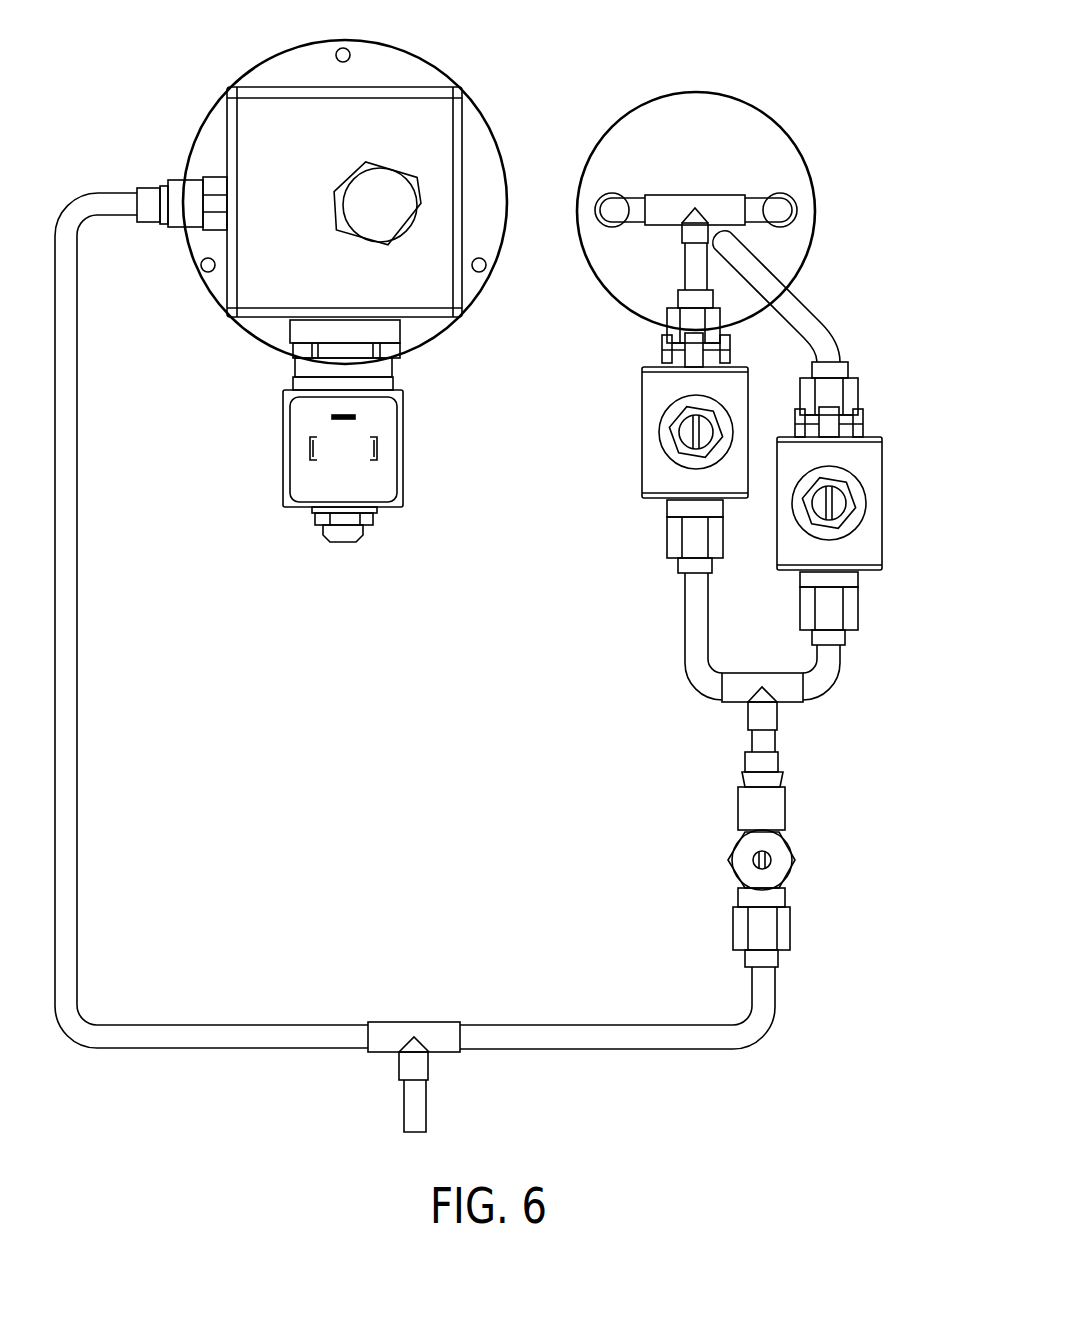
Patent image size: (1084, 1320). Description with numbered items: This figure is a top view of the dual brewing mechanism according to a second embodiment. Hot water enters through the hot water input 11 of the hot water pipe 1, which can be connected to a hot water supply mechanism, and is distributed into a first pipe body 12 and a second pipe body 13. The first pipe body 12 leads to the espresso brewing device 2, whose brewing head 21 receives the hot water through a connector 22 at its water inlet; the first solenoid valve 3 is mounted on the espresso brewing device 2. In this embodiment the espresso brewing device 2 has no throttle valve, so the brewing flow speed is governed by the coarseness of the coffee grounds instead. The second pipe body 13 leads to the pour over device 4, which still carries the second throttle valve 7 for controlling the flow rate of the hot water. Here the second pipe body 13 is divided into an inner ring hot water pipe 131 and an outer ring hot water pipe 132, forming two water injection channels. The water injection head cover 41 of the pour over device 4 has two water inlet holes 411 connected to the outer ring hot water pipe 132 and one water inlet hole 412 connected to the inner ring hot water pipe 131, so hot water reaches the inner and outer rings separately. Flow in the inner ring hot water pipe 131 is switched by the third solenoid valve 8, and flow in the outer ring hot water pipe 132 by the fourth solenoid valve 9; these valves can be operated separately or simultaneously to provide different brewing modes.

The hot water pipe 1 is at (436, 1026).
The hot water input 11 is at (412, 1105).
The first pipe body 12 is at (70, 620).
The second pipe body 13 is at (620, 1035).
The inner ring hot water pipe 131 is at (803, 300).
The outer ring hot water pipe 132 is at (689, 267).
The espresso brewing device 2 is at (310, 280).
The brewing head 21 is at (290, 108).
The connector 22 is at (195, 190).
The first solenoid valve 3 is at (287, 449).
The pour over device 4 is at (713, 189).
The water injection head cover 41 is at (643, 125).
The water inlet holes 411 is at (596, 210).
The water inlet hole 412 is at (714, 222).
The second throttle valve 7 is at (792, 849).
The third solenoid valve 8 is at (881, 475).
The fourth solenoid valve 9 is at (644, 422).